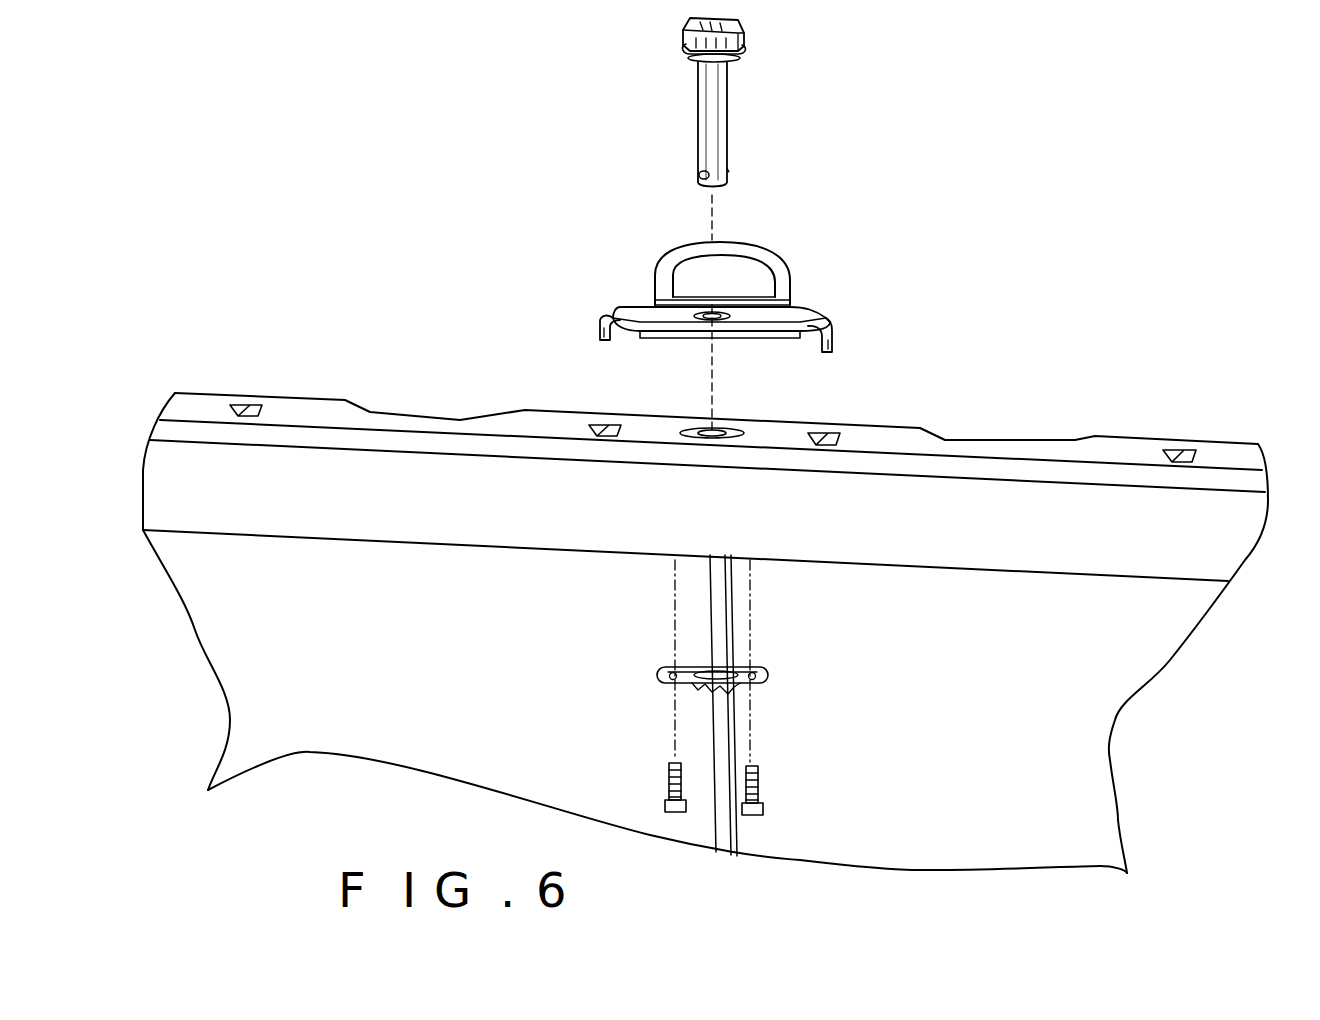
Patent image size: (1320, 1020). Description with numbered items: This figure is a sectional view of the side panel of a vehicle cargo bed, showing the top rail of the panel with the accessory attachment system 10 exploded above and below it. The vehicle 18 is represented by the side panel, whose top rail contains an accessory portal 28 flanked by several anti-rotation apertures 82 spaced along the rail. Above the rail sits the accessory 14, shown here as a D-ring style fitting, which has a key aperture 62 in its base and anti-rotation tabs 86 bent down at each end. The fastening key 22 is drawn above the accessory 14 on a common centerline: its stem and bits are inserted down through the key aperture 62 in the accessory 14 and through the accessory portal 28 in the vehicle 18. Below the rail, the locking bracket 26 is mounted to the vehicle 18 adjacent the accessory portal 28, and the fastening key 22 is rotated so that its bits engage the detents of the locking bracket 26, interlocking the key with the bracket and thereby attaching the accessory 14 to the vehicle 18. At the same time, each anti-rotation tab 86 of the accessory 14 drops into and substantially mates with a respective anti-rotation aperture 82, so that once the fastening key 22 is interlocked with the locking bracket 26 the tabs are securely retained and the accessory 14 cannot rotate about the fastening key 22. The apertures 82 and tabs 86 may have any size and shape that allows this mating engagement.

The accessory attachment system 10 is at (530, 182).
The accessory 14 is at (800, 312).
The vehicle 18 is at (990, 505).
The fastening key 22 is at (760, 109).
The locking bracket 26 is at (788, 678).
The accessory portal 28 is at (735, 430).
The key aperture 62 is at (707, 313).
The anti-rotation aperture 82 is at (250, 408).
The anti-rotation tab 86 is at (600, 320).